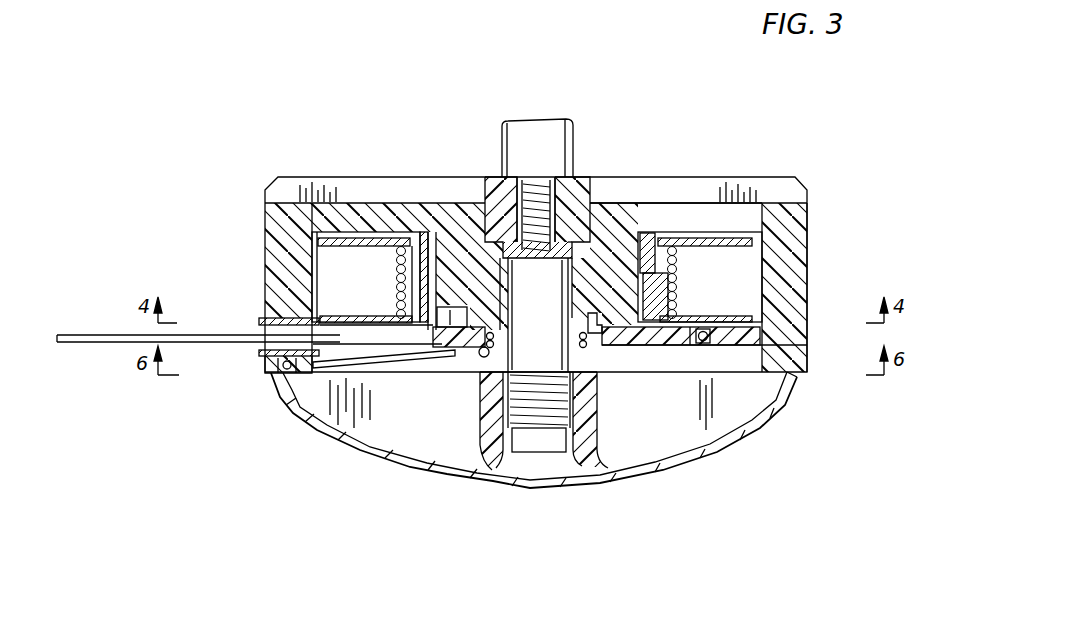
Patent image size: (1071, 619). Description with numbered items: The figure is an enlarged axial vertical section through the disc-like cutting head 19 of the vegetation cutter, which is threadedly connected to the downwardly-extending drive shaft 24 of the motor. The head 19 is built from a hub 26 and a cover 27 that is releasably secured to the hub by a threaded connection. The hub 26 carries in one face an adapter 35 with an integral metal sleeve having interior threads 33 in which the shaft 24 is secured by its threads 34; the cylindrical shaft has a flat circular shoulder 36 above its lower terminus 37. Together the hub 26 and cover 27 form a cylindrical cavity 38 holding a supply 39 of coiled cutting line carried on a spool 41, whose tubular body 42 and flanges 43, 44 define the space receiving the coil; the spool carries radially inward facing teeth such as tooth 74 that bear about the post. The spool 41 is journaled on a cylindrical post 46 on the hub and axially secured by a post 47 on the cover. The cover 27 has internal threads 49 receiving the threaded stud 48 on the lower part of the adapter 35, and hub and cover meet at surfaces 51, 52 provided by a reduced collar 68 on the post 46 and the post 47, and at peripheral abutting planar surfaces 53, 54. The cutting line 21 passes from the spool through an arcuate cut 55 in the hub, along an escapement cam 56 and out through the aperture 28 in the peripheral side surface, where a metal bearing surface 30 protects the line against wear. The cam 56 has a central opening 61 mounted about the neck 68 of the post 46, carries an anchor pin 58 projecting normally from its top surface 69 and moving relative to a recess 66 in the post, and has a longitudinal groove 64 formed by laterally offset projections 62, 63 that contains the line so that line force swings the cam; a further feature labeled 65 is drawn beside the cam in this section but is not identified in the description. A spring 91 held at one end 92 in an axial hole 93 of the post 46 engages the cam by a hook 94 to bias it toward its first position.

The head 19 is at (814, 270).
The cutting line 21 is at (100, 334).
The drive shaft 24 is at (574, 132).
The hub 26 is at (797, 230).
The cover 27 is at (783, 186).
The aperture 28 is at (318, 328).
The metal bearing surface 30 is at (262, 353).
The interior threads 33 is at (508, 205).
The threads 34 is at (521, 160).
The adapter 35 is at (626, 178).
The flat circular shoulder 36 is at (577, 205).
The lower terminus 37 is at (540, 250).
The cylindrical cavity 38 is at (350, 278).
The supply of coiled cutting line 39 is at (322, 256).
The spool 41 is at (373, 318).
The tubular body 42 is at (412, 240).
The flange 43 is at (352, 238).
The flange 44 is at (318, 312).
The cylindrical post 46 is at (656, 200).
The post 47 is at (494, 440).
The threaded stud 48 is at (572, 248).
The internal threads 49 is at (530, 450).
The meeting surface 51 is at (598, 405).
The meeting surface 52 is at (497, 372).
The peripheral abutting planar surface 53 is at (803, 375).
The peripheral abutting planar surface 54 is at (788, 374).
The arcuate cut 55 is at (290, 376).
The escapement cam 56 is at (692, 346).
The anchor pin 58 is at (452, 316).
The central opening 61 is at (594, 344).
The laterally offset projection 62 is at (700, 335).
The laterally offset projection 63 is at (705, 344).
The longitudinal groove 64 is at (712, 338).
The plate underside 65 is at (666, 346).
The recess 66 is at (500, 330).
The reduced collar 68 is at (586, 410).
The top surface 69 is at (605, 324).
The tooth 74 is at (430, 265).
The spring 91 is at (586, 352).
The spring end 92 is at (578, 330).
The axial hole 93 is at (565, 326).
The hook 94 is at (477, 353).